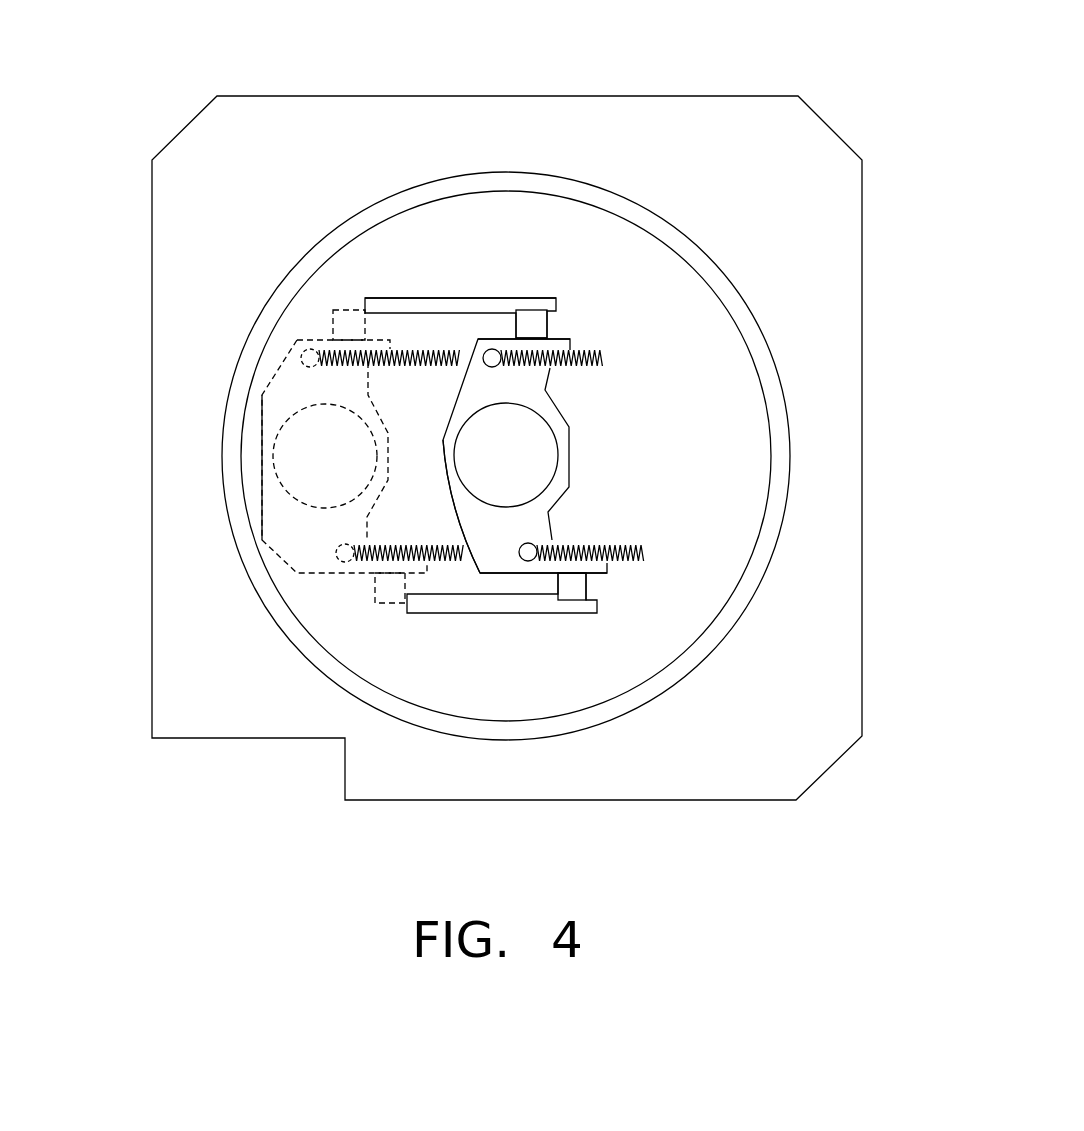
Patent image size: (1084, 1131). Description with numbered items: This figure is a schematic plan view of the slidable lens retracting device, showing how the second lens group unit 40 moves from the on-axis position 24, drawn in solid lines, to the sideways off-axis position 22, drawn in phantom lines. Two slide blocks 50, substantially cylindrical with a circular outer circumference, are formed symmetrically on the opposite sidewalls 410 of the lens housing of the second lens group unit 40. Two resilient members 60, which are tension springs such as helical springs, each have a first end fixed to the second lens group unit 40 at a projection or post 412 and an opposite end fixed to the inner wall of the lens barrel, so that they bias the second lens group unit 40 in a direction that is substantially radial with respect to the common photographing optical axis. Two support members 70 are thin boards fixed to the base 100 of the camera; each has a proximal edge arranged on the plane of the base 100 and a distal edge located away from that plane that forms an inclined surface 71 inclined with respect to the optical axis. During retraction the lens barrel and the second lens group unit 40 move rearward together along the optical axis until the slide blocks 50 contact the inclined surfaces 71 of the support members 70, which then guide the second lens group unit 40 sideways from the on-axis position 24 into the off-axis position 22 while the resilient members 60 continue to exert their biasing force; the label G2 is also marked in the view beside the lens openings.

The base 100 is at (628, 122).
The inclined surface 71 is at (410, 305).
The support member 70 is at (475, 303).
The slide block 50 is at (533, 325).
The second lens group unit 40 is at (542, 392).
The sidewall 410 is at (567, 338).
The post 412 is at (496, 350).
The resilient member 60 is at (605, 358).
The off-axis position 22 is at (323, 458).
The on-axis position 24 is at (505, 455).
The second gap G2 is at (523, 435).